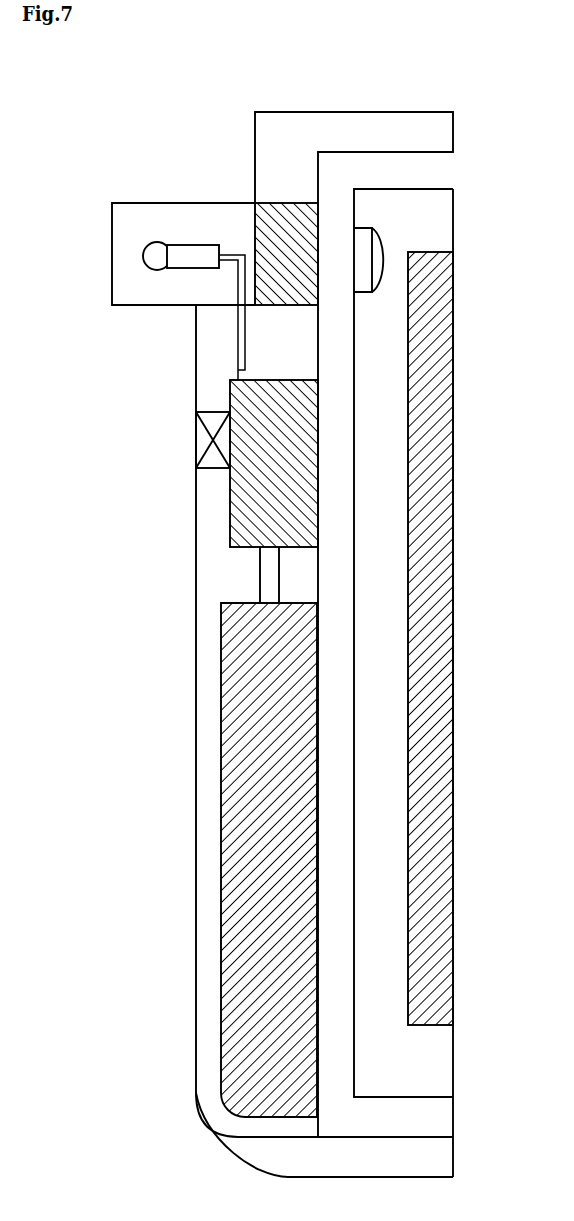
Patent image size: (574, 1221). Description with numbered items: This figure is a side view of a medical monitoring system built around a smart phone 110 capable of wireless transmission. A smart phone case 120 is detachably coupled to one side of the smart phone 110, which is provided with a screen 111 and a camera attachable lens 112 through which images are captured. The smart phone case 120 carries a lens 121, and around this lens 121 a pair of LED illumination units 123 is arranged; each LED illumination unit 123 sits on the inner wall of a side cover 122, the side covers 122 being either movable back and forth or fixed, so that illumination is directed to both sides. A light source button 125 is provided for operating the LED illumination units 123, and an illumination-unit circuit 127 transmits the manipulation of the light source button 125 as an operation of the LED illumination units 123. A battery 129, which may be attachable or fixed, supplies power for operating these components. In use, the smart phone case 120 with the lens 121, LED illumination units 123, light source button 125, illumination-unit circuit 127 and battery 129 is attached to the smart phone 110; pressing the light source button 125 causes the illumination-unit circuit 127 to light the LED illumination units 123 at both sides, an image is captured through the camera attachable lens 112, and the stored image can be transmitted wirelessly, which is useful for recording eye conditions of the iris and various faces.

The smart phone 110 is at (465, 1040).
The screen 111 is at (440, 802).
The camera attachable lens 112 is at (376, 229).
The smart phone case 120 is at (458, 102).
The lens 121 is at (254, 203).
The side cover 122 is at (128, 218).
The LED illumination unit 123 is at (143, 260).
The light source button 125 is at (210, 441).
The illumination-unit circuit 127 is at (258, 513).
The battery 129 is at (257, 898).